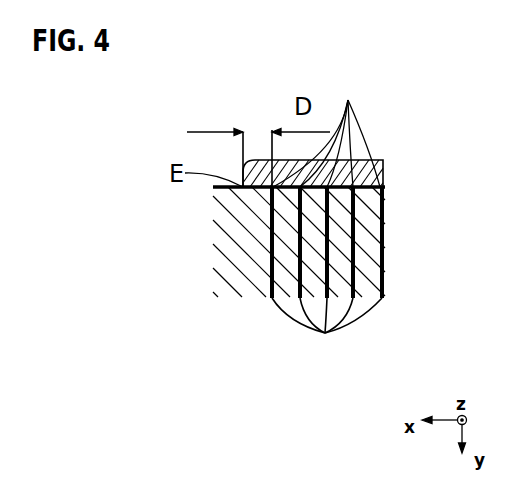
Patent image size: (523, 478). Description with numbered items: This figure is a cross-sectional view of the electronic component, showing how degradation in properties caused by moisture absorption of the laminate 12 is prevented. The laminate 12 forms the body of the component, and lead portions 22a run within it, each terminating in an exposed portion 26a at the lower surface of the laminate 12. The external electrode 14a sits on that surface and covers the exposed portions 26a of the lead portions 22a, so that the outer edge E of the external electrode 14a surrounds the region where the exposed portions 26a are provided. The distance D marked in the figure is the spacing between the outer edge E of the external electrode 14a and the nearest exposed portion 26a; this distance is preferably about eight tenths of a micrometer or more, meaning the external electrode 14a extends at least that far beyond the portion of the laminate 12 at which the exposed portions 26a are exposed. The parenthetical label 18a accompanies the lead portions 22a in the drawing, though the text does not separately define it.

The laminate 12 is at (222, 243).
The external electrode 14a is at (255, 157).
The exposed portions 26a is at (326, 126).
The lead portions 22a is at (327, 293).
The groove portions 18a is at (327, 293).